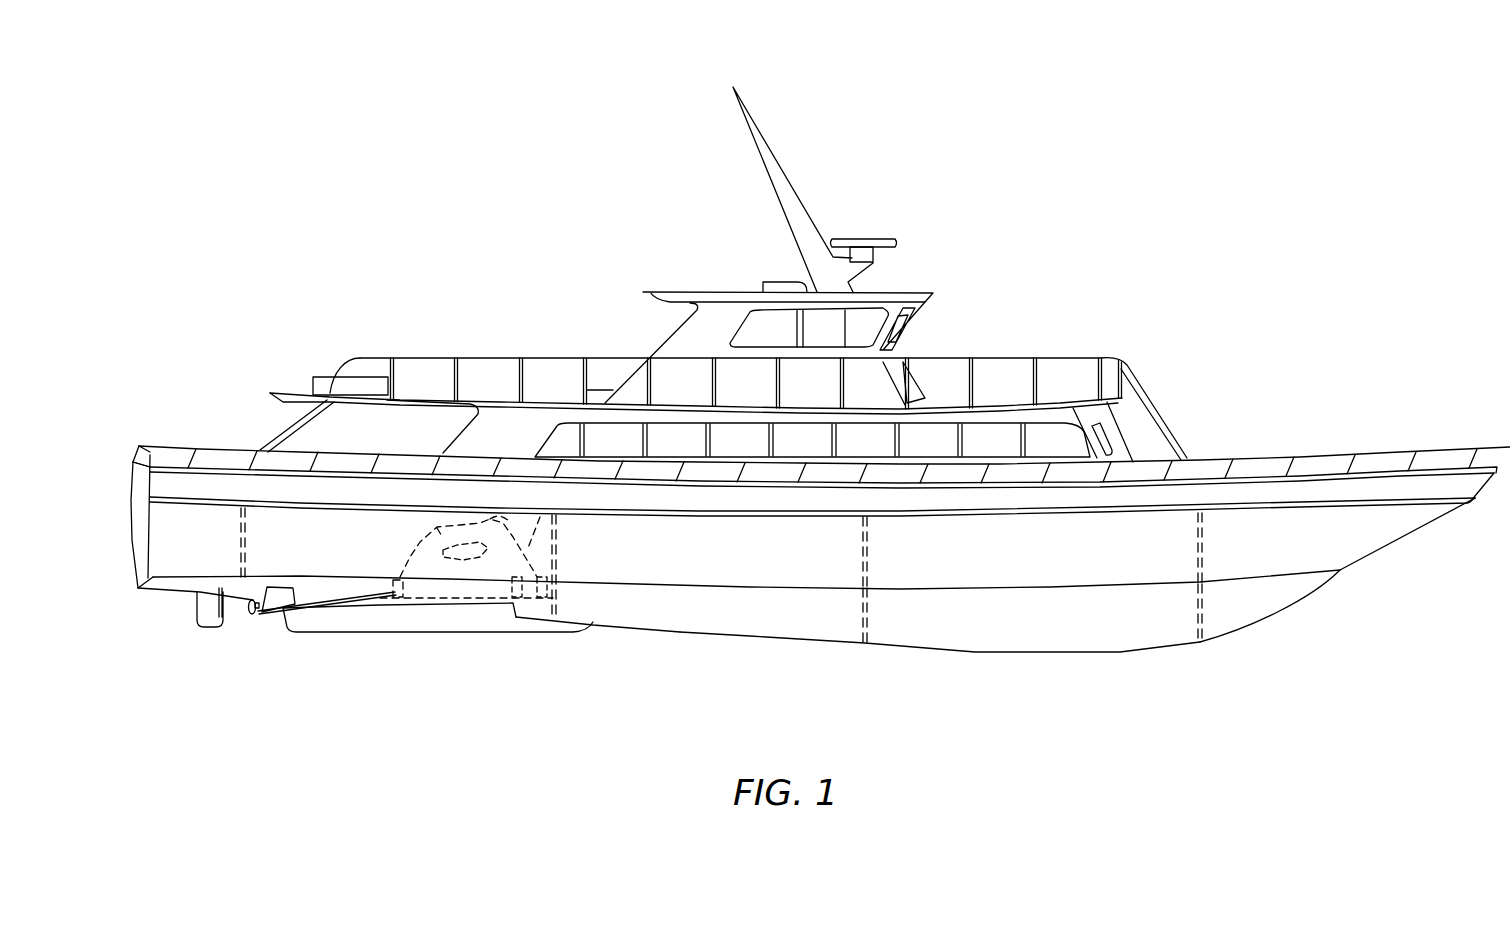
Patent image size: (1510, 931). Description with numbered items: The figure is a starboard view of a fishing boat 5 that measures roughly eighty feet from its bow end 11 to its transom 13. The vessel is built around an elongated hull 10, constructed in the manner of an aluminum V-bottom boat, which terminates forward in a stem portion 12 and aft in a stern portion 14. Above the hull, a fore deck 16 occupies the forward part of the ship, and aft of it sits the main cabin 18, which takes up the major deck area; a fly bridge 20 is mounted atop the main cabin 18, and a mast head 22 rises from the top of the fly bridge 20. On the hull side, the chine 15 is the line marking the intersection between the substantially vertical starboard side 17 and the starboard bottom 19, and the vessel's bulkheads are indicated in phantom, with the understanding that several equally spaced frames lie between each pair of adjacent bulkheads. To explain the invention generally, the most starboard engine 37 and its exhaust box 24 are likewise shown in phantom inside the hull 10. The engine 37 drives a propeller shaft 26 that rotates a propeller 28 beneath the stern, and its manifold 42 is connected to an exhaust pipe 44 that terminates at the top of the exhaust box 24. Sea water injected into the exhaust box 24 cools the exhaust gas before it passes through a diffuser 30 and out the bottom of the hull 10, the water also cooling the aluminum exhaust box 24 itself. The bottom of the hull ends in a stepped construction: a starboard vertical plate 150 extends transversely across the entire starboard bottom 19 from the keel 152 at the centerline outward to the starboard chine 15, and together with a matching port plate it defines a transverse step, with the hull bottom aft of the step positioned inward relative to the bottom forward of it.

The fishing boat 5 is at (603, 313).
The hull 10 is at (978, 646).
The bow end 11 is at (1402, 503).
The stem portion 12 is at (1298, 598).
The transom 13 is at (120, 480).
The stern portion 14 is at (185, 558).
The chine 15 is at (1072, 590).
The fore deck 16 is at (1337, 440).
The starboard side 17 is at (933, 567).
The main cabin 18 is at (942, 437).
The starboard bottom 19 is at (807, 625).
The fly bridge 20 is at (910, 273).
The mast head 22 is at (792, 195).
The exhaust box 24 is at (548, 578).
The propeller shaft 26 is at (337, 597).
The propeller 28 is at (255, 618).
The diffuser 30 is at (512, 608).
The engine 37 is at (420, 543).
The manifold 42 is at (460, 552).
The exhaust pipe 44 is at (532, 526).
The starboard vertical plate 150 is at (507, 618).
The keel 152 is at (378, 626).